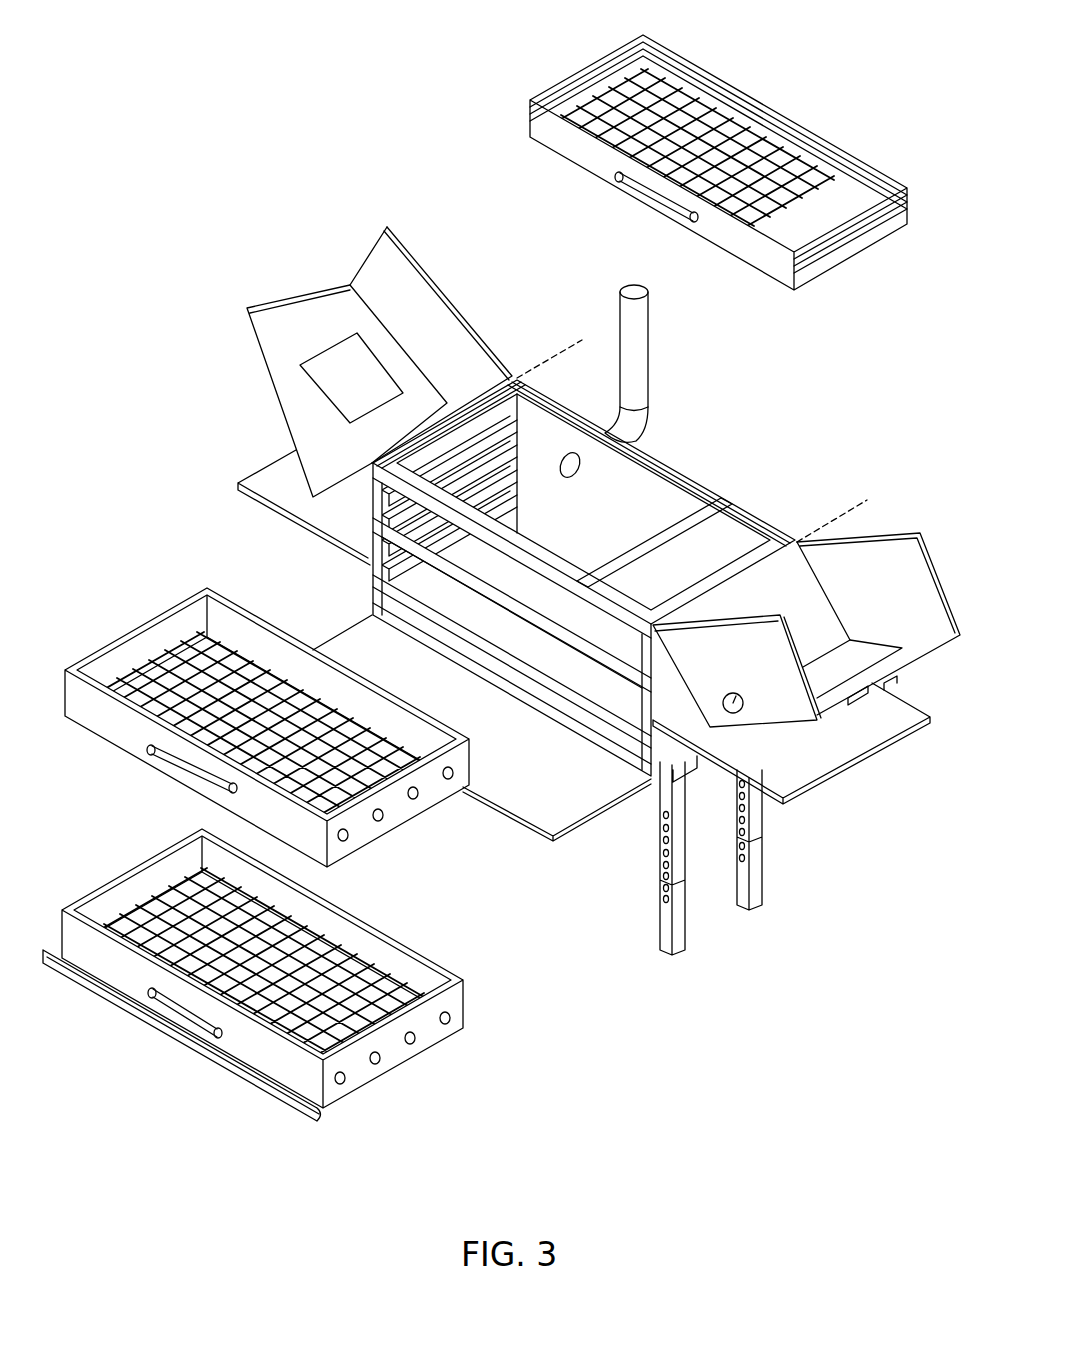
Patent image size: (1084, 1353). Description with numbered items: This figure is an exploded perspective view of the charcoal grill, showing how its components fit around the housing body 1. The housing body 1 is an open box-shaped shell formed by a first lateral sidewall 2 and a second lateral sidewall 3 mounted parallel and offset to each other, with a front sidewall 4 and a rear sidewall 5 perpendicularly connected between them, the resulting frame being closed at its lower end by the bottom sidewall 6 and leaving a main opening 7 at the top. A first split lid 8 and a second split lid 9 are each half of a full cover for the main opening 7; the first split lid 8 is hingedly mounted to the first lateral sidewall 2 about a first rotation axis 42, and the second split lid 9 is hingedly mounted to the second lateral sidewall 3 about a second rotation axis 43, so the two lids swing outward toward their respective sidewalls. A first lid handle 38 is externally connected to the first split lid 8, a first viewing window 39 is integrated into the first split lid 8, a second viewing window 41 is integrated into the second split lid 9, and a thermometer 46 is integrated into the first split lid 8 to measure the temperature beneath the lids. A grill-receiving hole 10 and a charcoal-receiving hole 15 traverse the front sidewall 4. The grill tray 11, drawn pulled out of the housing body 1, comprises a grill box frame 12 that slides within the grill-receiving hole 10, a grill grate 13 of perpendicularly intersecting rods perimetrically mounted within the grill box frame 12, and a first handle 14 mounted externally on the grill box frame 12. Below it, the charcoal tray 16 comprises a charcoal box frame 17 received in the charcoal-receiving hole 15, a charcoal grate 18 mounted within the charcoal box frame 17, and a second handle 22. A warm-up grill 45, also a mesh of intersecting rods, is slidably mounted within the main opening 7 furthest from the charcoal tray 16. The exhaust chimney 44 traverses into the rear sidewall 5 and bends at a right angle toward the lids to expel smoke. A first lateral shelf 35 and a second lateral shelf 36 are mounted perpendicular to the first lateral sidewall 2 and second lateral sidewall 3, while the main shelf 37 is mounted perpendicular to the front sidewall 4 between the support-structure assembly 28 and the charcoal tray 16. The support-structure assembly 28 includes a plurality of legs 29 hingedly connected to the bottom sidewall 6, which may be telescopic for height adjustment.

The housing body 1 is at (728, 486).
The first lateral sidewall 2 is at (668, 690).
The second lateral sidewall 3 is at (512, 523).
The front sidewall 4 is at (478, 598).
The rear sidewall 5 is at (613, 534).
The bottom sidewall 6 is at (520, 649).
The main opening 7 is at (632, 492).
The first split lid 8 is at (907, 548).
The second split lid 9 is at (330, 312).
The grill-receiving hole 10 is at (404, 536).
The grill tray 11 is at (272, 727).
The grill box frame 12 is at (432, 798).
The grill grate 13 is at (173, 637).
The first handle 14 is at (216, 790).
The charcoal-receiving hole 15 is at (401, 587).
The charcoal tray 16 is at (282, 999).
The charcoal box frame 17 is at (455, 1004).
The charcoal grate 18 is at (194, 859).
The second handle 22 is at (220, 1031).
The support-structure assembly 28 is at (751, 855).
The plurality of legs 29 is at (662, 872).
The first lateral shelf 35 is at (919, 716).
The second lateral shelf 36 is at (273, 482).
The main shelf 37 is at (542, 828).
The first lid handle 38 is at (862, 702).
The first viewing window 39 is at (859, 648).
The second viewing window 41 is at (352, 350).
The first rotation axis 42 is at (834, 512).
The second rotation axis 43 is at (578, 342).
The exhaust chimney 44 is at (642, 320).
The warm-up grill 45 is at (790, 128).
The thermometer 46 is at (743, 703).